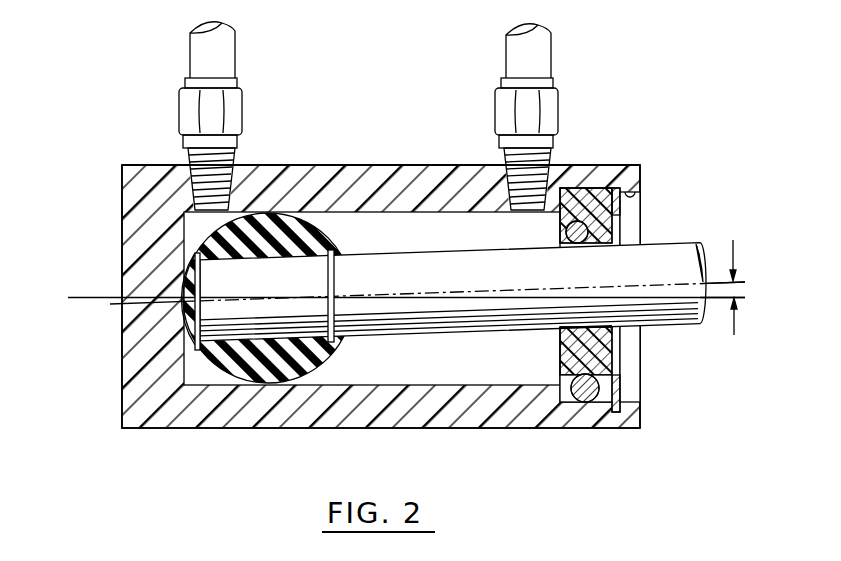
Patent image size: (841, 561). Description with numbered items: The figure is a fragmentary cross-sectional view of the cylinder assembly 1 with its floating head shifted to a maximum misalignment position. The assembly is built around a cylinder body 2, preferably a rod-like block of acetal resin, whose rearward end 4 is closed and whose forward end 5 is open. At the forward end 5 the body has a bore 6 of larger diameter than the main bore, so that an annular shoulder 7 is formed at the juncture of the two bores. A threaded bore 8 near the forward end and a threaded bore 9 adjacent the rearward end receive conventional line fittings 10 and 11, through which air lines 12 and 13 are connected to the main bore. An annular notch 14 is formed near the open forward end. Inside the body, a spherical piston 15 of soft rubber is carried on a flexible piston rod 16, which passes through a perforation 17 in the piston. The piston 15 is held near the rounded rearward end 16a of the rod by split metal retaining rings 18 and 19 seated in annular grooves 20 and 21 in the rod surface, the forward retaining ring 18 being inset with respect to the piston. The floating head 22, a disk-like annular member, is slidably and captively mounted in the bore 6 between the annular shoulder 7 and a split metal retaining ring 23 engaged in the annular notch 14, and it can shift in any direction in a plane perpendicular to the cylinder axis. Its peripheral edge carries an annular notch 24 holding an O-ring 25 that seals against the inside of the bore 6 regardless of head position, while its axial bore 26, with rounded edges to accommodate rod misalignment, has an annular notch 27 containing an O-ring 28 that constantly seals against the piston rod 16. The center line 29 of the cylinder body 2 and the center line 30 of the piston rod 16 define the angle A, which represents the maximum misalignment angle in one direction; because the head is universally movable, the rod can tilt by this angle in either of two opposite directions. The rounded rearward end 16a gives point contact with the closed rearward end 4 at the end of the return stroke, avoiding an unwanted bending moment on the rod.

The cylinder assembly 1 is at (340, 158).
The cylinder body 2 is at (390, 164).
The rearward end 4 is at (360, 288).
The forward end 5 is at (642, 216).
The bore 6 is at (645, 196).
The annular shoulder 7 is at (548, 178).
The threaded bore 8 is at (515, 172).
The threaded bore 9 is at (232, 182).
The line fitting 10 is at (495, 115).
The line fitting 11 is at (242, 110).
The air line 12 is at (505, 52).
The air line 13 is at (226, 50).
The annular notch 14 is at (617, 186).
The piston 15 is at (323, 235).
The piston rod 16 is at (443, 285).
The rearward end of piston rod 16a is at (112, 305).
The perforation 17 is at (266, 258).
The retaining ring 18 is at (335, 262).
The retaining ring 19 is at (200, 275).
The annular groove 20 is at (334, 345).
The annular groove 21 is at (184, 330).
The floating head 22 is at (562, 228).
The retaining ring 23 is at (624, 388).
The annular notch 24 is at (566, 362).
The O-ring 25 is at (586, 404).
The axial bore 26 is at (570, 246).
The annular notch 27 is at (568, 337).
The O-ring 28 is at (588, 323).
The center line of cylinder body 29 is at (712, 300).
The center line of piston rod 30 is at (718, 281).
The angle A is at (735, 287).